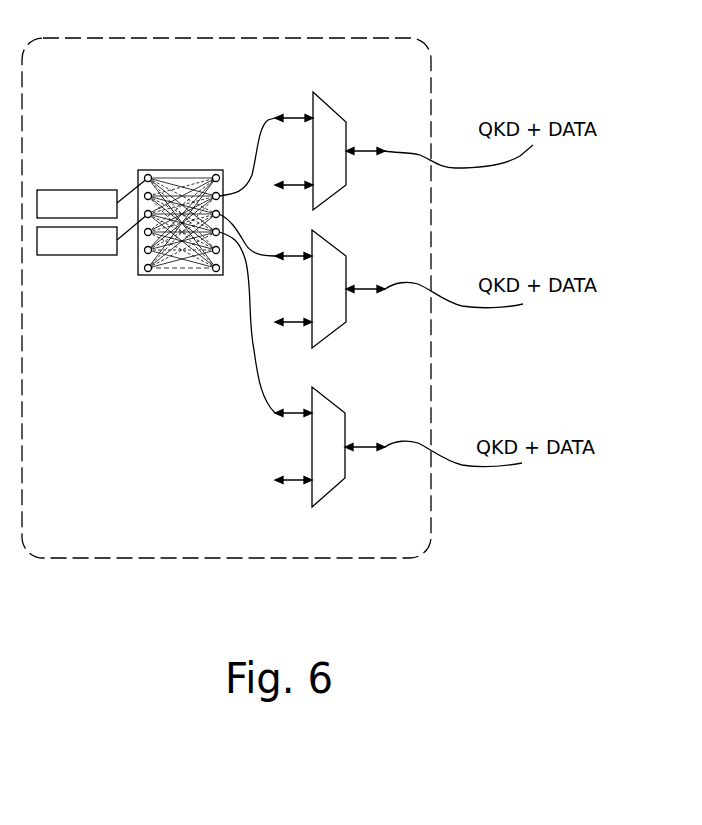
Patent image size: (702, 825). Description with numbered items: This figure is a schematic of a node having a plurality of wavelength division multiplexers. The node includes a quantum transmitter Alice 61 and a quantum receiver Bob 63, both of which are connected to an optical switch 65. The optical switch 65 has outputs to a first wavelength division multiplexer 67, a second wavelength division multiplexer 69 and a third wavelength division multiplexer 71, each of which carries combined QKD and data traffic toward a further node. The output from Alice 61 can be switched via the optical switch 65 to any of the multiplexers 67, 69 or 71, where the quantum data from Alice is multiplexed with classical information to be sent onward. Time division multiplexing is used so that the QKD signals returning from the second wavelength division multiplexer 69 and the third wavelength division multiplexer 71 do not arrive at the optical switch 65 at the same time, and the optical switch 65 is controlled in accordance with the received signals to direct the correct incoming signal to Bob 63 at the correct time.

The quantum transmitter Alice 61 is at (92, 187).
The quantum receiver Bob 63 is at (92, 252).
The optical switch 65 is at (180, 205).
The first wavelength division multiplexer 67 is at (330, 151).
The second wavelength division multiplexer 69 is at (330, 291).
The third wavelength division multiplexer 71 is at (330, 456).